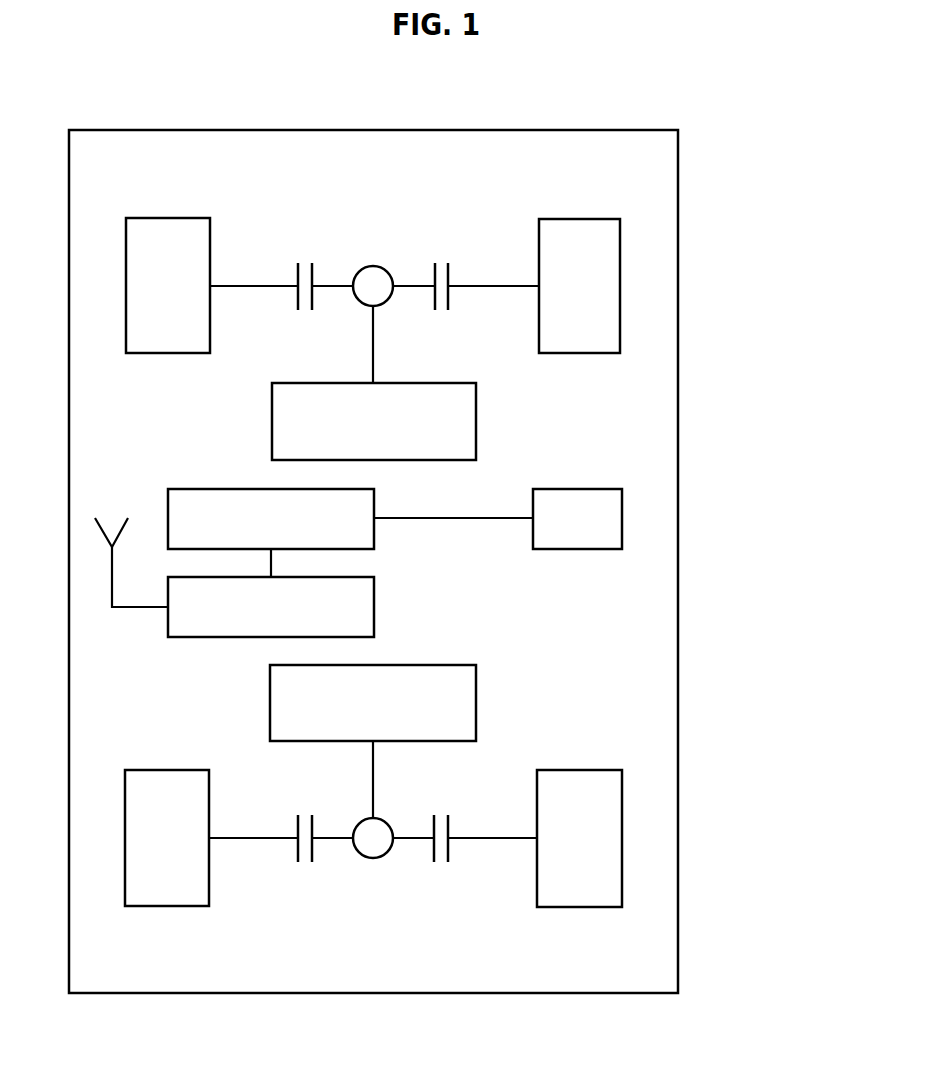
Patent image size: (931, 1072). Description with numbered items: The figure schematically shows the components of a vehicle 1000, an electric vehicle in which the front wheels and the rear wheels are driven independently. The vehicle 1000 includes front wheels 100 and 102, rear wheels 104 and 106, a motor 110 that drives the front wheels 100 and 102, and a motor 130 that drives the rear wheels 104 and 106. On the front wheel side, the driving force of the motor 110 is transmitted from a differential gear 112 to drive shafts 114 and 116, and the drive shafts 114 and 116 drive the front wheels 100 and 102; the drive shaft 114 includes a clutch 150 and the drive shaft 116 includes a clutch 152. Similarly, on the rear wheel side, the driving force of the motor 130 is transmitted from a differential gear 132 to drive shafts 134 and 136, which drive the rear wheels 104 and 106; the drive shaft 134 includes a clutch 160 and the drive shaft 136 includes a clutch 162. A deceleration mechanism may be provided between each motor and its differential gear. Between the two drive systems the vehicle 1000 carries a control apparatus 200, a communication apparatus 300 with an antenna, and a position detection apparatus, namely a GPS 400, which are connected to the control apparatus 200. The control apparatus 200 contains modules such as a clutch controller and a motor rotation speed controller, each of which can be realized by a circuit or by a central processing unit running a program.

The vehicle 1000 is at (805, 913).
The front wheel 100 is at (166, 232).
The front wheel 102 is at (577, 232).
The rear wheel 104 is at (166, 893).
The rear wheel 106 is at (578, 893).
The motor 110 is at (476, 420).
The motor 130 is at (476, 702).
The differential gear 112 is at (371, 266).
The differential gear 132 is at (368, 858).
The drive shaft 114 is at (230, 284).
The drive shaft 116 is at (511, 284).
The drive shaft 134 is at (230, 840).
The drive shaft 136 is at (511, 840).
The clutch 150 is at (297, 263).
The clutch 152 is at (435, 265).
The clutch 160 is at (298, 862).
The clutch 162 is at (434, 862).
The control apparatus 200 is at (374, 532).
The communication apparatus 300 is at (374, 601).
The position detection apparatus (GPS) 400 is at (577, 549).